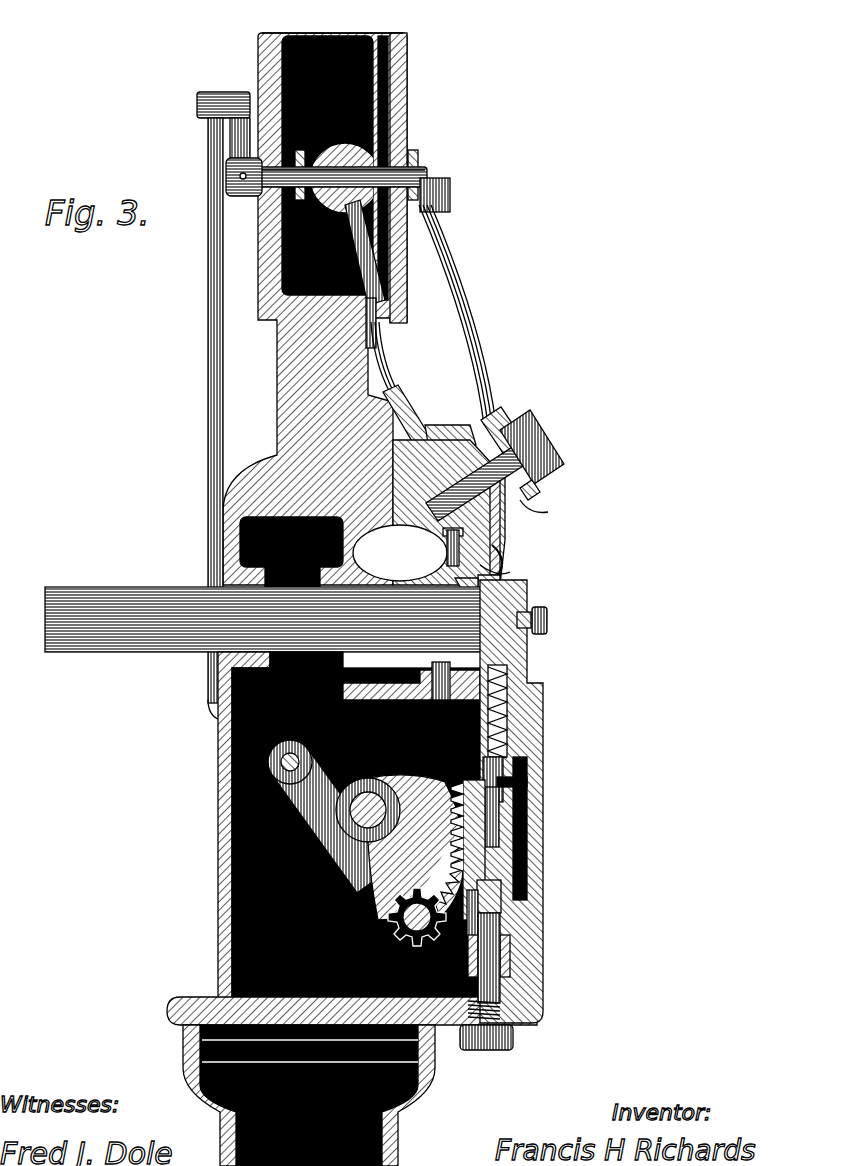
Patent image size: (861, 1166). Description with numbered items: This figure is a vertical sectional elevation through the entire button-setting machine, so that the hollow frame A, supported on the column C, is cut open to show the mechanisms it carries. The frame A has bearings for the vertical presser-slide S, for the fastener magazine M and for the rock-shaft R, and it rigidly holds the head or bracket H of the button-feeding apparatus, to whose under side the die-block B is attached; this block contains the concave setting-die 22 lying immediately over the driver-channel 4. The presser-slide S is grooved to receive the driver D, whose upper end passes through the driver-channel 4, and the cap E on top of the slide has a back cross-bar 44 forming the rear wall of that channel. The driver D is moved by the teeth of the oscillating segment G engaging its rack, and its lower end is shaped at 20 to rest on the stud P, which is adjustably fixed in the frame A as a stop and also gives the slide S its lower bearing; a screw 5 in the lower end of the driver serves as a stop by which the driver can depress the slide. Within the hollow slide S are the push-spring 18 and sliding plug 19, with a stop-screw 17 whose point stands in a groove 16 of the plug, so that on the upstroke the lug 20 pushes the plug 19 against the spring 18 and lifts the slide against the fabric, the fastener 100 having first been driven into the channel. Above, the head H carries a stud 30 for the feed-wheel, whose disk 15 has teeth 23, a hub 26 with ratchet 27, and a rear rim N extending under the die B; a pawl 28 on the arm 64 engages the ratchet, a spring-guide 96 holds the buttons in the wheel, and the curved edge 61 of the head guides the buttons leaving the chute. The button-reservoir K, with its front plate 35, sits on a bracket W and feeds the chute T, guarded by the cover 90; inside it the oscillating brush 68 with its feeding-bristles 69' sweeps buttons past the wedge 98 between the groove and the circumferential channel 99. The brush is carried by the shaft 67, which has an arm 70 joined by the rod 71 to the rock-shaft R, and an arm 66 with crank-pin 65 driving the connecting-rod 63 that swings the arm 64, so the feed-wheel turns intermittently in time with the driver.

The button-reservoir K is at (315, 309).
The front plate 35 is at (398, 88).
The circumferential channel 99 is at (335, 19).
The oscillating brush 68 is at (345, 170).
The bracket W is at (292, 392).
The arm 66 is at (418, 170).
The oscillating shaft 67 is at (400, 165).
The crank or pin 65 is at (450, 194).
The arm 70 is at (240, 138).
The rod 71 is at (212, 304).
The feeding-brush 69' is at (409, 252).
The wedge 98 is at (378, 308).
The connecting-rod 63 is at (447, 312).
The chute cover 90 is at (392, 366).
The button-chute T is at (414, 414).
The curved button-guiding edge 61 is at (444, 430).
The head or bracket H is at (448, 512).
The flange or rim N is at (440, 572).
The die-block B is at (446, 548).
The disk 15 is at (504, 524).
The spring-guide 96 is at (500, 566).
The teeth 23 is at (512, 573).
The concave setting-die 22 is at (514, 584).
The driver-channel 4 is at (493, 588).
The back cross-bar 44 is at (460, 584).
The stud 30 is at (548, 473).
The pawl 28 is at (500, 420).
The arm 64 is at (534, 425).
The ratchet 27 is at (542, 494).
The hub 26 is at (546, 511).
The magazine M is at (137, 598).
The frame A is at (222, 866).
The fastener 100 is at (440, 660).
The rock-shaft R is at (339, 816).
The gear or oscillating segment G is at (400, 850).
The stud P is at (488, 1048).
The presser-slide S is at (528, 656).
The cap E is at (540, 632).
The push-spring 18 is at (506, 712).
The driver D is at (485, 772).
The groove 16 is at (530, 812).
The stop-screw 17 is at (530, 781).
The sliding plug 19 is at (537, 832).
The rack Y is at (520, 860).
The lug or stop projection 20 is at (500, 895).
The stop-screw 5 is at (520, 926).
The column C is at (406, 1110).